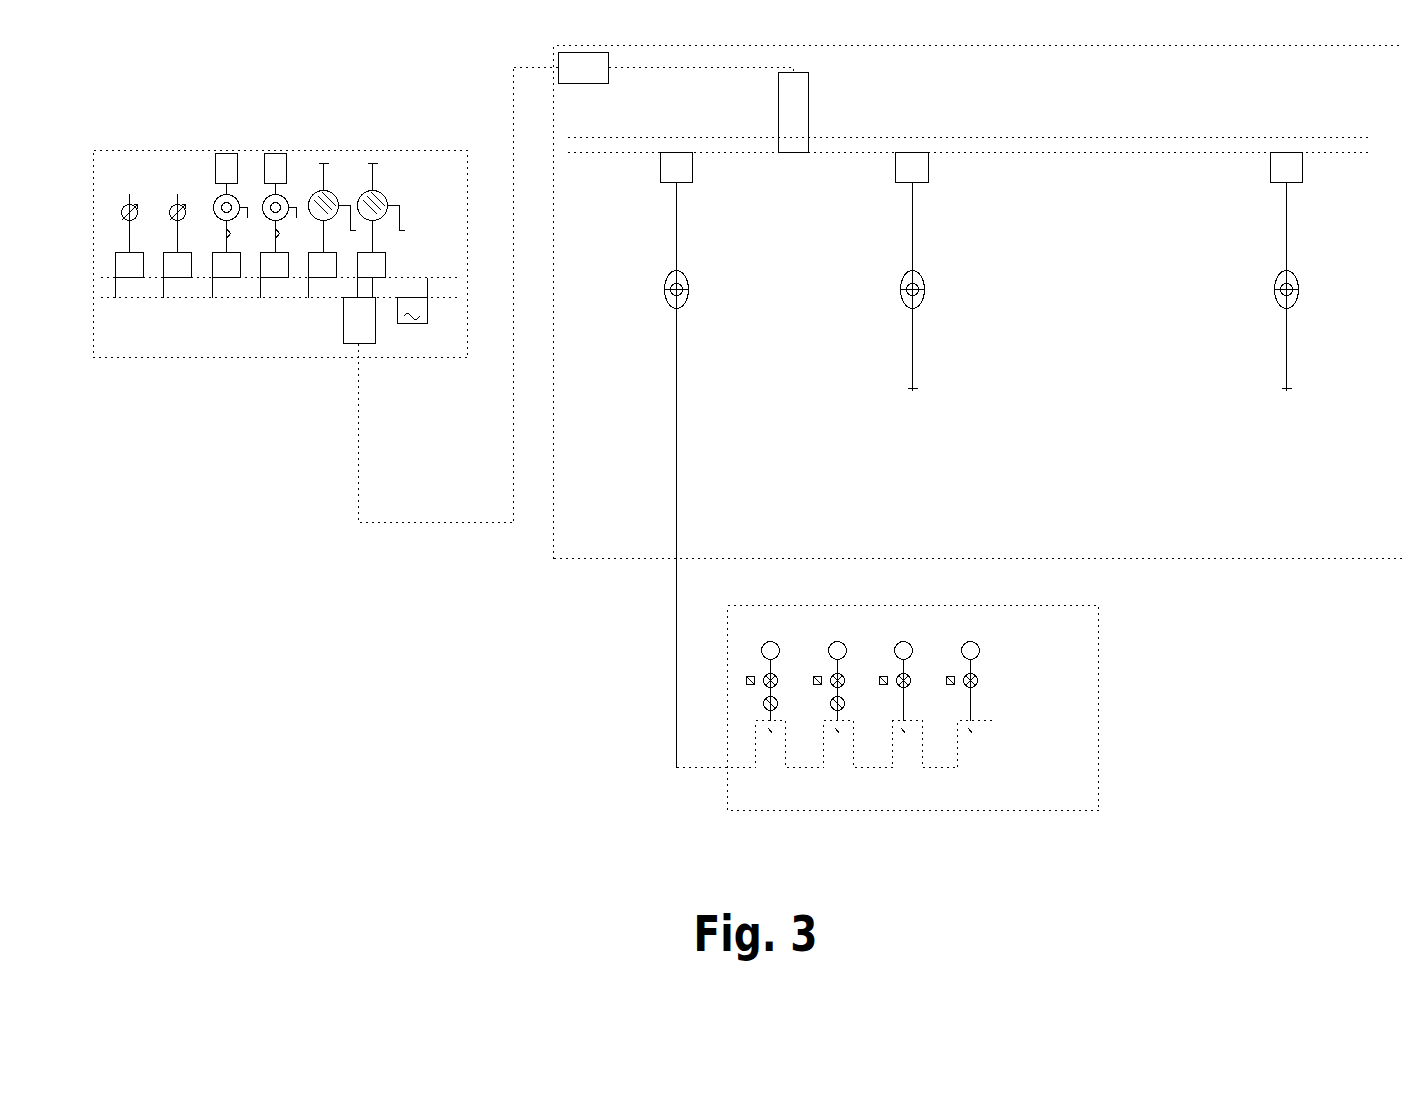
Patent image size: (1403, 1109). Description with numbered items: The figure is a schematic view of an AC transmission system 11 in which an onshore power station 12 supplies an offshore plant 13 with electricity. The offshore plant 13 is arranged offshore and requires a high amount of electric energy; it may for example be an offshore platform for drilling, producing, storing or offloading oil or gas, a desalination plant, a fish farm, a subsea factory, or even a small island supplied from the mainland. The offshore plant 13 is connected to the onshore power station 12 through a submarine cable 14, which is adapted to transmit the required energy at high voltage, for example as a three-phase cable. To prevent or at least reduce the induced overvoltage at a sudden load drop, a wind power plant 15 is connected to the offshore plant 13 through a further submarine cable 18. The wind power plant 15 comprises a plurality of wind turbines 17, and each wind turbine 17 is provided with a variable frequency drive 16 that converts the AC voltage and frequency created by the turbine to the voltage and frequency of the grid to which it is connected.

The AC transmission system 11 is at (433, 633).
The onshore power station 12 is at (223, 378).
The offshore plant 13 is at (1232, 577).
The submarine cable 14 is at (468, 523).
The wind power plant 15 is at (1122, 765).
The variable frequency drive 16 is at (750, 697).
The wind turbine 17 is at (760, 647).
The submarine cable 18 is at (676, 590).